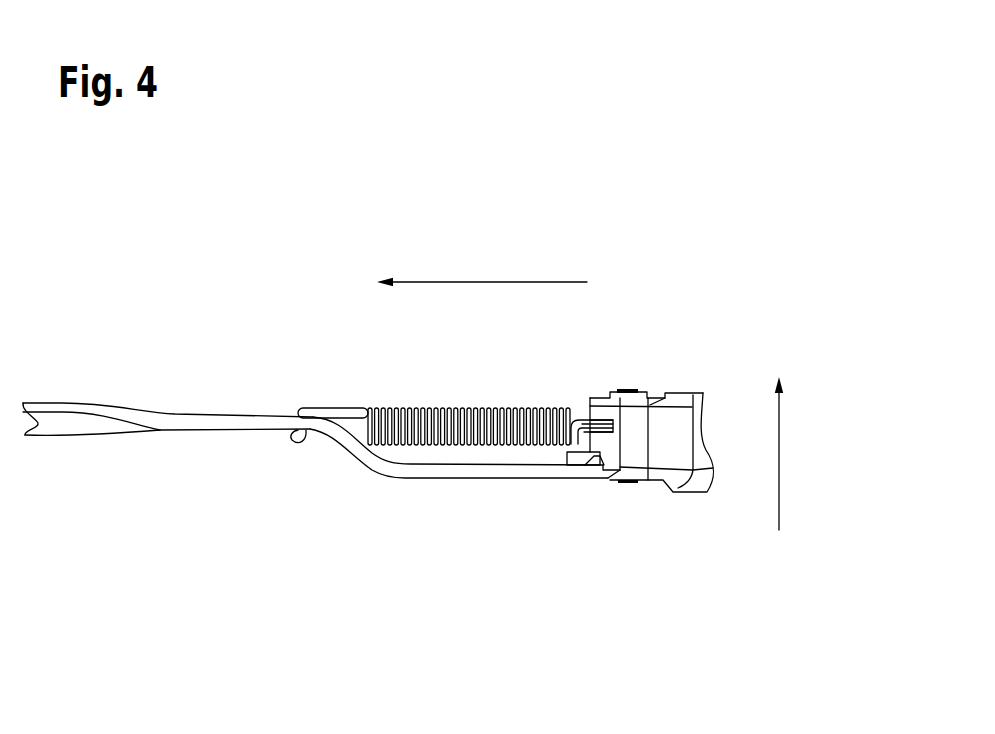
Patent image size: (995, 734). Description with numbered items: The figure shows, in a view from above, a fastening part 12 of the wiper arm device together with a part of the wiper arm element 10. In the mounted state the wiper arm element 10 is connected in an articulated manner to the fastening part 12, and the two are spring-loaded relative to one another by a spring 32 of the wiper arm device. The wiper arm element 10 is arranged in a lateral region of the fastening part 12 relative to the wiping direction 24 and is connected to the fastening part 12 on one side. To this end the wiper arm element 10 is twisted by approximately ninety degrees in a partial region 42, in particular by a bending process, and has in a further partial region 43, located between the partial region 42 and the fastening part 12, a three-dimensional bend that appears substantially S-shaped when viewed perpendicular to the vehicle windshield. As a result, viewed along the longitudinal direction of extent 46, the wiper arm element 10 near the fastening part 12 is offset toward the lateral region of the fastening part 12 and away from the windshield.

The wiper arm element 10 is at (170, 348).
The fastening part 12 is at (727, 387).
The wiping direction 24 is at (779, 460).
The spring 32 is at (426, 390).
The partial region 42 is at (102, 462).
The further partial region 43 is at (340, 484).
The longitudinal direction of extent 46 is at (488, 280).